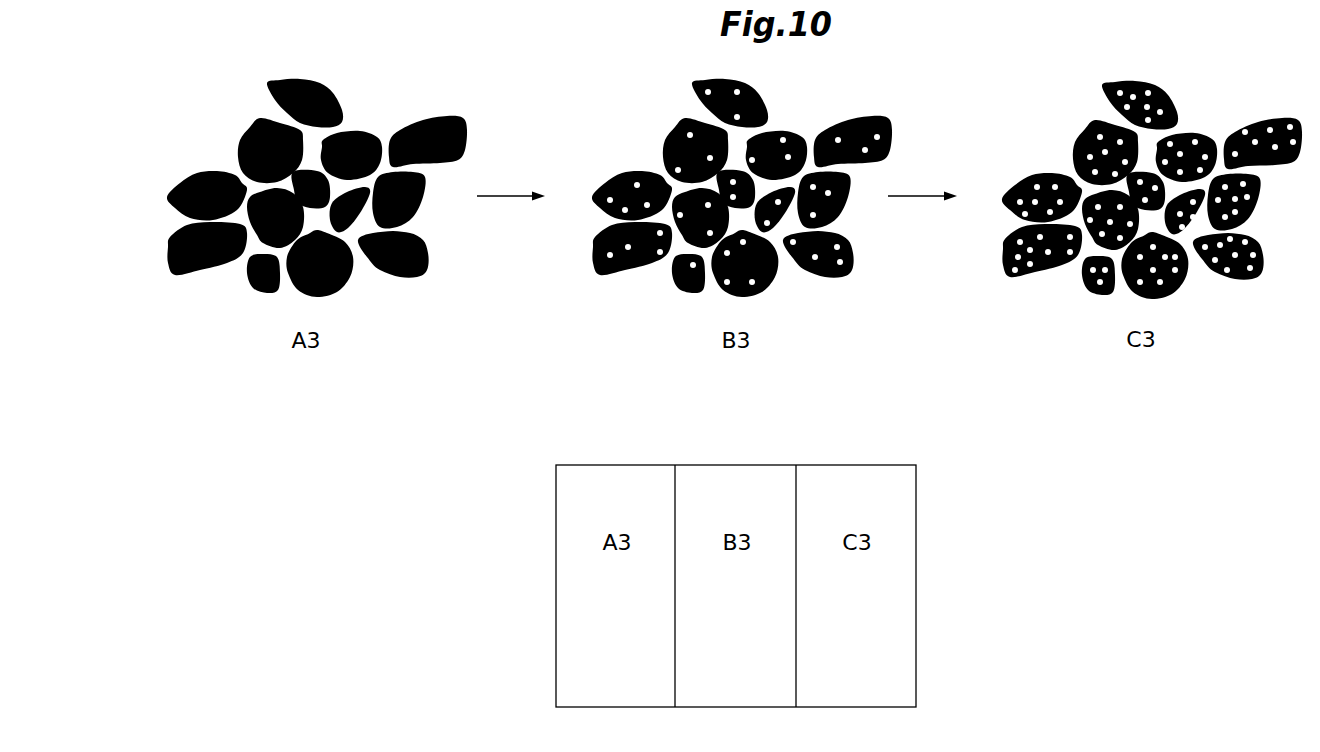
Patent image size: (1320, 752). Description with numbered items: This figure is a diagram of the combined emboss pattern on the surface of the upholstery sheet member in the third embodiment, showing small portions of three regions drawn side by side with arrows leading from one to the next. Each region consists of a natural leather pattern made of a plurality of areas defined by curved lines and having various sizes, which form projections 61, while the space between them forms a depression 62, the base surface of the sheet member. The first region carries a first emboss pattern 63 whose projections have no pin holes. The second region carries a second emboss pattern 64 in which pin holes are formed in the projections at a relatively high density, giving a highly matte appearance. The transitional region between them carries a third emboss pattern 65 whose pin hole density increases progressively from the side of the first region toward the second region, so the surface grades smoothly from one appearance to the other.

The projections 61 is at (428, 127).
The depression 62 is at (380, 147).
The first emboss pattern 63 is at (318, 217).
The second emboss pattern 64 is at (1083, 301).
The third emboss pattern 65 is at (690, 308).